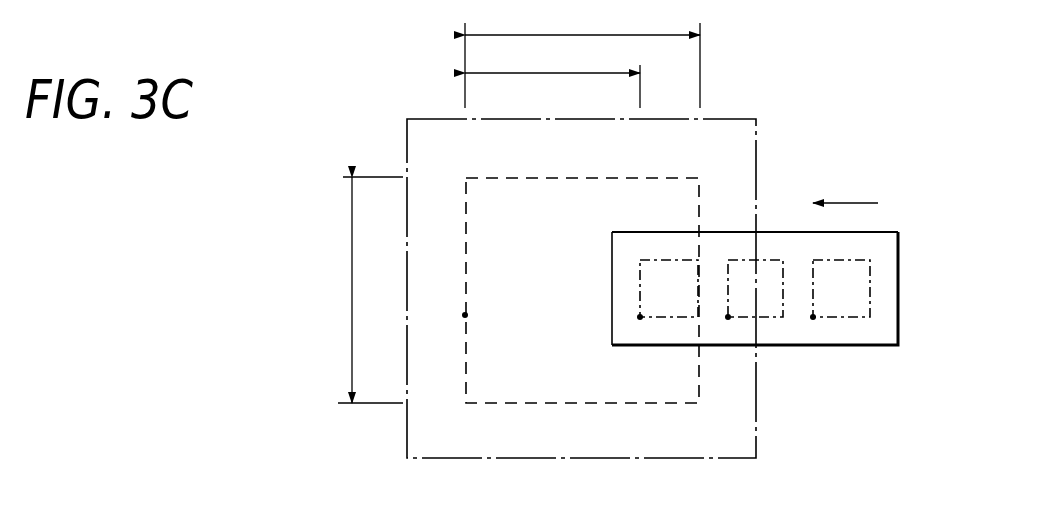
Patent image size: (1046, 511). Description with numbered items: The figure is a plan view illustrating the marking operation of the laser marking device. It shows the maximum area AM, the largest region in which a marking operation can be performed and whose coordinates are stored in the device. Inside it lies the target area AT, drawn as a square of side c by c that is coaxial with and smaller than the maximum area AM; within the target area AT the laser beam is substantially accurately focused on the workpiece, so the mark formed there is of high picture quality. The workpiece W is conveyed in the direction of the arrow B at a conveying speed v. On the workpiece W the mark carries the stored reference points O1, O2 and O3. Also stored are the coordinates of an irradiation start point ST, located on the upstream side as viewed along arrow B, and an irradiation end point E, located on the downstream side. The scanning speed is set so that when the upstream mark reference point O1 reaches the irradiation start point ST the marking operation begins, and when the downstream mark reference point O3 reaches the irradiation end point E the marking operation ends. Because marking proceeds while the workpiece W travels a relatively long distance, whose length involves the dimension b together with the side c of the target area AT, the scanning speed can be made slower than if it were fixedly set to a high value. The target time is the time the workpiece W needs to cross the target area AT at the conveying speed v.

The maximum area AM is at (757, 133).
The target area AT is at (700, 183).
The workpiece W is at (765, 230).
The irradiation start point ST is at (644, 327).
The mark reference point O1 is at (640, 317).
The mark reference point O2 is at (728, 317).
The mark reference point O3 is at (813, 317).
The irradiation end point E is at (465, 315).
The direction of movement B is at (845, 189).
The conveying speed v is at (894, 205).
The side length of target area c is at (513, 207).
The movement distance component b is at (552, 79).